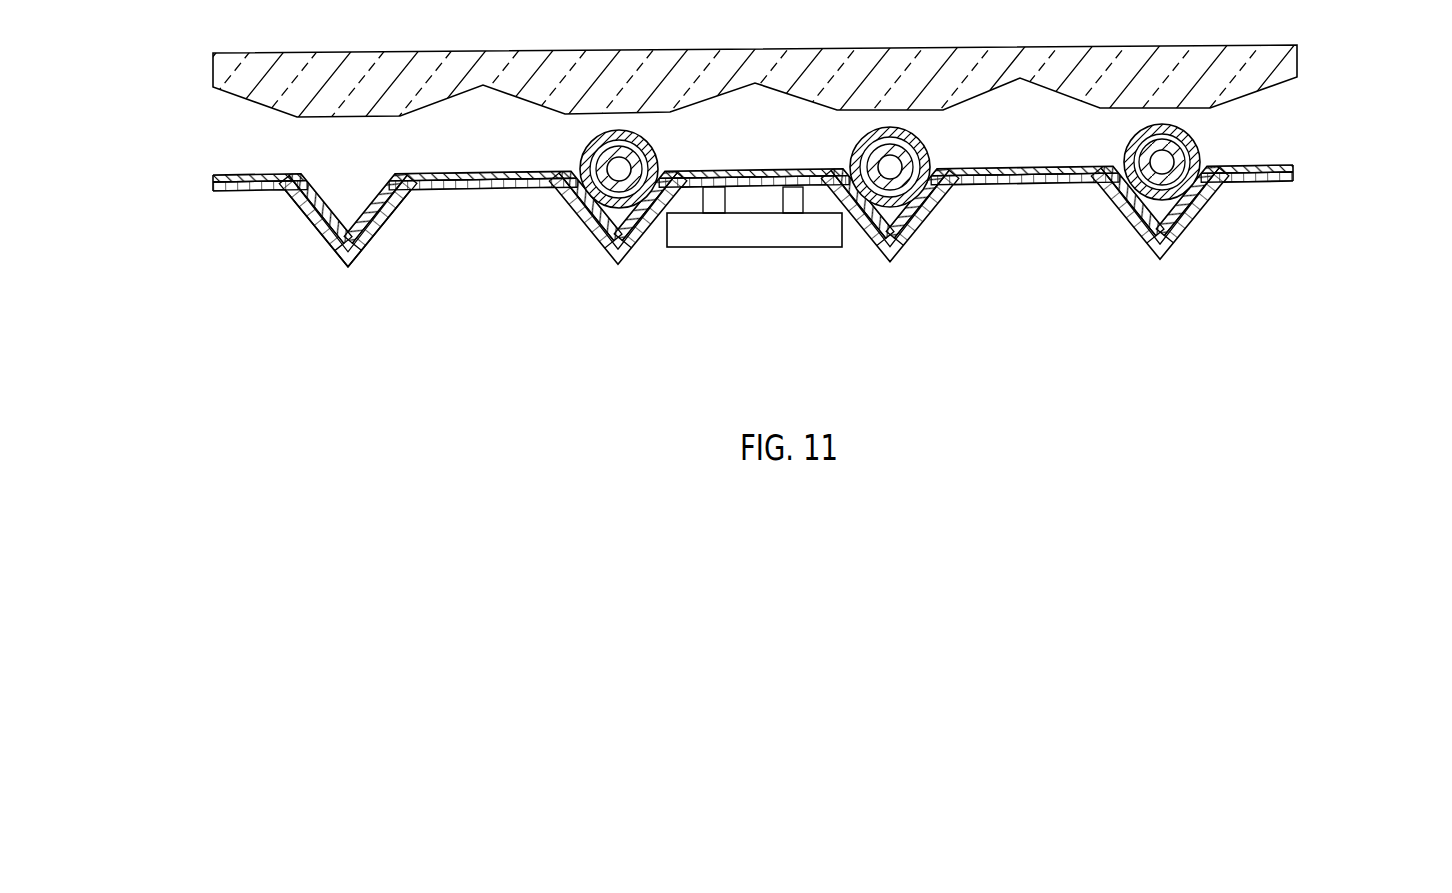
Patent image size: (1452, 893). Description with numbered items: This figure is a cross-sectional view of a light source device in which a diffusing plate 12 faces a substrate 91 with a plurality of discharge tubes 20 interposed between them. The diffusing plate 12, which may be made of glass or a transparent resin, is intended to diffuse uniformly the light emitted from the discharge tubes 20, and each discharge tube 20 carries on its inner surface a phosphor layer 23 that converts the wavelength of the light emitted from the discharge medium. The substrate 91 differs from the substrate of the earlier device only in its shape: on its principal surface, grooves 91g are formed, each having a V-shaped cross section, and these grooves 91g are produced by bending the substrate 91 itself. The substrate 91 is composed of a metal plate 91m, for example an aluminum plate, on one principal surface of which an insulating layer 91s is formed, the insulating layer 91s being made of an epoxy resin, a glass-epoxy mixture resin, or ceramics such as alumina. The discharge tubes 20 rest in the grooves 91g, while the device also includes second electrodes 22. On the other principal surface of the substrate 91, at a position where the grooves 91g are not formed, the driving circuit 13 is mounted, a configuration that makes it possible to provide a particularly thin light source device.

The diffusing plate 12 is at (1285, 55).
The discharge tube 20 is at (976, 138).
The phosphor layer 23 is at (1198, 152).
The substrate 91 is at (819, 201).
The metal plate 91m is at (1297, 170).
The insulating layer 91s is at (800, 216).
The groove 91g is at (343, 173).
The second electrode 22 is at (334, 228).
The driving circuit 13 is at (748, 242).